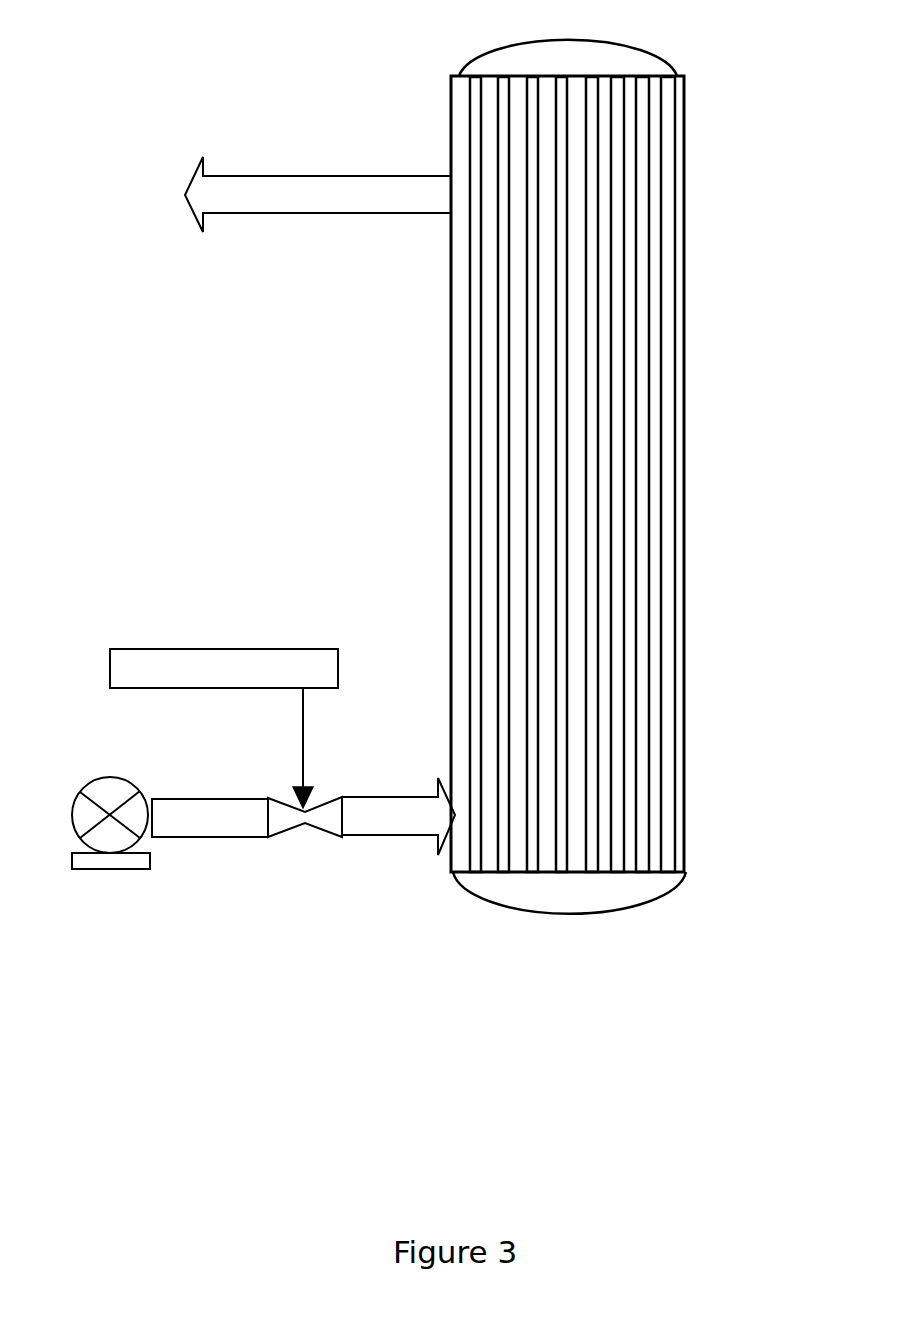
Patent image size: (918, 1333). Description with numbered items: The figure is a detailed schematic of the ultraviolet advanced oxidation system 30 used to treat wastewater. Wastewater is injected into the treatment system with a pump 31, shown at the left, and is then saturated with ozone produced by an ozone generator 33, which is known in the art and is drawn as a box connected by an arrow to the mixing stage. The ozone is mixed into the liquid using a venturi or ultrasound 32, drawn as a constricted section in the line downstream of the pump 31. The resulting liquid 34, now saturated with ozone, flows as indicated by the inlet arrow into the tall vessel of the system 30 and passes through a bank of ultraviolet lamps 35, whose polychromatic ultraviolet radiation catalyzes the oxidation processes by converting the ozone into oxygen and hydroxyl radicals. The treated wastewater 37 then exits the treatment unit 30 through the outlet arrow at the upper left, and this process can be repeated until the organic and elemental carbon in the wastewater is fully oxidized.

The ultraviolet advanced oxidation system 30 is at (708, 102).
The pump 31 is at (160, 799).
The venturi or ultrasound 32 is at (305, 836).
The ozone generator 33 is at (224, 728).
The liquid 34 is at (398, 816).
The bank of ultraviolet lamps 35 is at (668, 258).
The treated wastewater 37 is at (318, 194).